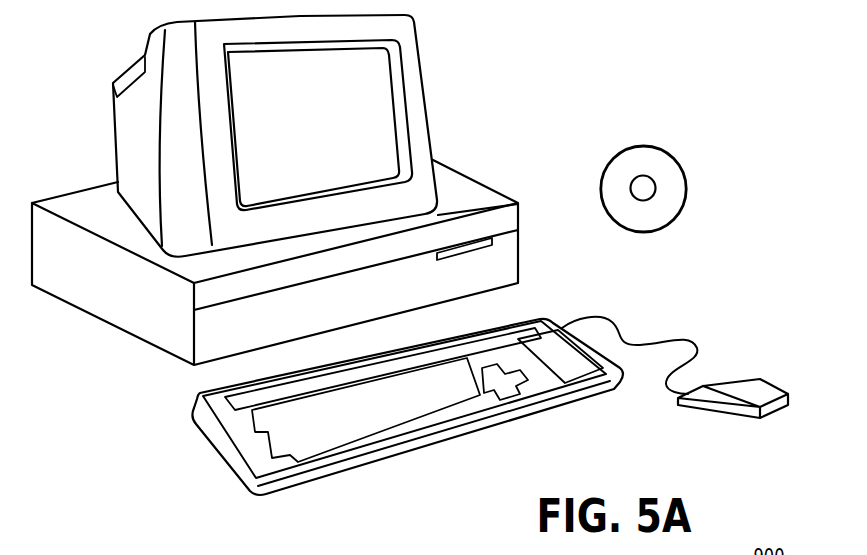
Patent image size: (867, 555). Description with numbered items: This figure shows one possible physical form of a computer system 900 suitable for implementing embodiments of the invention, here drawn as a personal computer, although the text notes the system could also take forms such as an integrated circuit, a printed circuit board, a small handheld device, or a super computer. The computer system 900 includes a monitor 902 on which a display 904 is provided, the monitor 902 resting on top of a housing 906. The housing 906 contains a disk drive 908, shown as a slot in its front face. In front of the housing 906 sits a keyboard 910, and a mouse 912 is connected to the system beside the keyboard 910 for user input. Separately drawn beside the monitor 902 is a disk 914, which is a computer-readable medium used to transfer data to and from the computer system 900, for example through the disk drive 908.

The computer system 900 is at (553, 58).
The monitor 902 is at (430, 107).
The display 904 is at (385, 78).
The housing 906 is at (147, 345).
The disk drive 908 is at (492, 238).
The keyboard 910 is at (503, 424).
The mouse 912 is at (763, 388).
The disk 914 is at (658, 147).